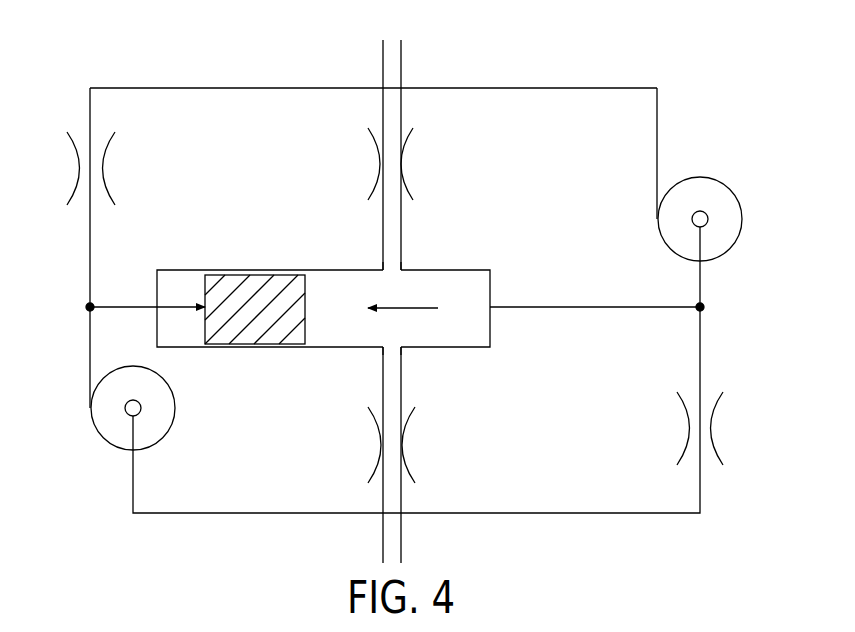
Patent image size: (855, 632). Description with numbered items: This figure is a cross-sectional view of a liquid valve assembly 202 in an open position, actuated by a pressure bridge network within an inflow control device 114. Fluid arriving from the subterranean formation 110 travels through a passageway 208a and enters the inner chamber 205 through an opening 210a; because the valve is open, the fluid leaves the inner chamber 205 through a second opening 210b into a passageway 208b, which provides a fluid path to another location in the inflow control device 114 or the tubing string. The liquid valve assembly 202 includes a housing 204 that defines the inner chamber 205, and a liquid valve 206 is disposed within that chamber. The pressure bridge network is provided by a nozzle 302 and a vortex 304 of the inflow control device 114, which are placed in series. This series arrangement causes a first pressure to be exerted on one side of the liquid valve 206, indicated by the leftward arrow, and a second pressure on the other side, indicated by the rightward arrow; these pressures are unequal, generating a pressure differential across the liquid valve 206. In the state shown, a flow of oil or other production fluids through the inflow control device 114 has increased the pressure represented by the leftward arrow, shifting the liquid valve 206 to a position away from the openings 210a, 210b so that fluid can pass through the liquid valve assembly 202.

The subterranean formation 110 is at (398, 46).
The inflow control device 114 is at (628, 123).
The liquid valve assembly 202 is at (213, 237).
The housing 204 is at (302, 262).
The inner chamber 205 is at (470, 318).
The liquid valve 206 is at (318, 305).
The passageway 208a is at (392, 110).
The passageway 208b is at (393, 498).
The opening 210a is at (392, 256).
The opening 210b is at (393, 350).
The nozzle 302 is at (717, 215).
The vortex 304 is at (148, 403).